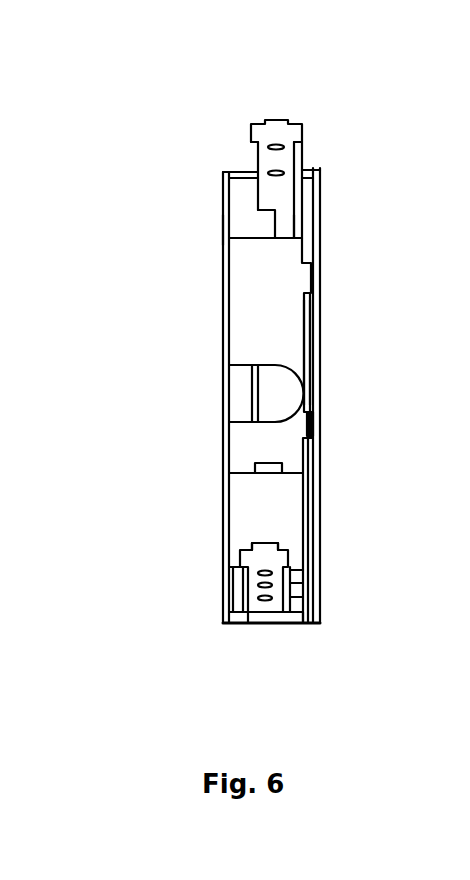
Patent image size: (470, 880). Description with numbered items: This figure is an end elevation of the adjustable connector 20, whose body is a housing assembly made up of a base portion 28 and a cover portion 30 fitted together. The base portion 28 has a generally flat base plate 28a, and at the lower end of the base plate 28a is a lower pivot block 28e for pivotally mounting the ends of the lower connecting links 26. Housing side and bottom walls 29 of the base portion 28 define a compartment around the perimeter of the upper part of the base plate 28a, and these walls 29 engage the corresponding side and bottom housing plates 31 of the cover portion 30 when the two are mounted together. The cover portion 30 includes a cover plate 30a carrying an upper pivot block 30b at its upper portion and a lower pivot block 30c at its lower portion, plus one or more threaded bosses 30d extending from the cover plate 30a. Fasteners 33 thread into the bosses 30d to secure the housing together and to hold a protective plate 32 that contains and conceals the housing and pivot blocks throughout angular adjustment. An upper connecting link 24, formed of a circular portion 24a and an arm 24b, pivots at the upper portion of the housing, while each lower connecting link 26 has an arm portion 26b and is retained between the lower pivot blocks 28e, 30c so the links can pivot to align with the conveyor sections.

The adjustable connector 20 is at (178, 129).
The upper connecting link 24 is at (301, 189).
The circular portion 24a is at (263, 222).
The arm 24b is at (277, 123).
The lower connecting link 26 is at (272, 611).
The arm portion 26b is at (267, 552).
The base portion 28 is at (282, 291).
The base plate 28a is at (320, 343).
The lower pivot block 28e is at (291, 618).
The housing side and bottom walls 29 is at (257, 301).
The cover portion 30 is at (223, 492).
The cover plate 30a is at (222, 229).
The upper pivot block 30b is at (242, 190).
The lower pivot block 30c is at (247, 623).
The boss 30d is at (233, 572).
The side and bottom housing plates 31 is at (243, 395).
The protective plate 32 is at (320, 425).
The fastener 33 is at (296, 570).